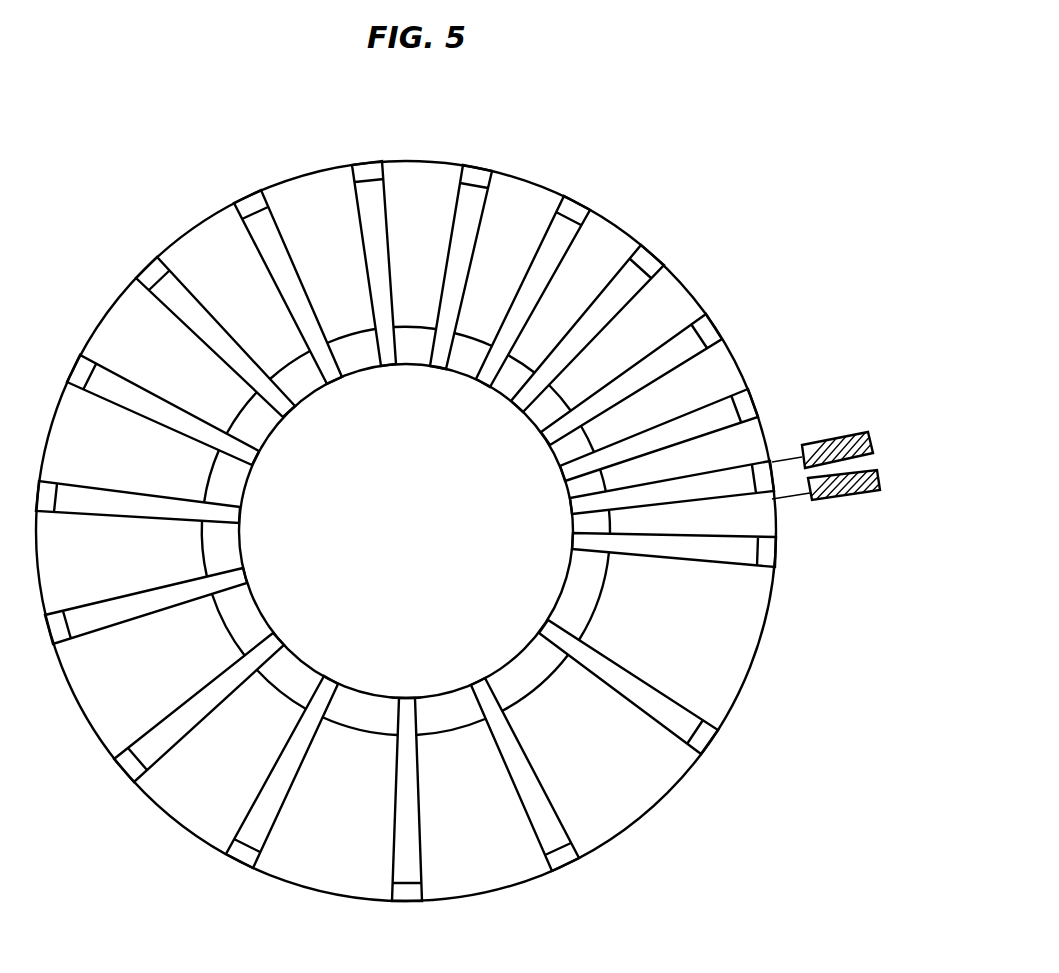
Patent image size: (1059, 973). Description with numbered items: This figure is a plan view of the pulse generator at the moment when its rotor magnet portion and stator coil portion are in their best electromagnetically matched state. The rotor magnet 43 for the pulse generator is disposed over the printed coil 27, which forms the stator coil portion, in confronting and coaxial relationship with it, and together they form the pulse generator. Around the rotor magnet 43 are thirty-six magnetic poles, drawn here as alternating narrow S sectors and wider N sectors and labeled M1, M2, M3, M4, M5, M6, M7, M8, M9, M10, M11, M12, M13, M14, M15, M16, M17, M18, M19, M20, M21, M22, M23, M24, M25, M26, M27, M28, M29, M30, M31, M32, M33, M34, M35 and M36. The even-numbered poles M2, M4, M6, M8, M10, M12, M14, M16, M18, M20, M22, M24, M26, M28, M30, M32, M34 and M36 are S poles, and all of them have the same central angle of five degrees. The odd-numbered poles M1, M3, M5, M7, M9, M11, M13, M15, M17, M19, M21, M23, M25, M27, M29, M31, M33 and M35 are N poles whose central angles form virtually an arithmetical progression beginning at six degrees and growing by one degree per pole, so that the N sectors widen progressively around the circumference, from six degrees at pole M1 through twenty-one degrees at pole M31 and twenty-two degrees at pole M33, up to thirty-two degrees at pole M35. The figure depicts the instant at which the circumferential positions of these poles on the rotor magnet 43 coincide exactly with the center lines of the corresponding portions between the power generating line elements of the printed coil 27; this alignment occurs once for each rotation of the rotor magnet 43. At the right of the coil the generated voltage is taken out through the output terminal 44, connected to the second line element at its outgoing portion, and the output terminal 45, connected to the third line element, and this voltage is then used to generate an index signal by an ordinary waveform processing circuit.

The printed coil 27 is at (474, 299).
The rotor magnet for the pulse generator 43 is at (424, 192).
The output terminal 44 is at (880, 480).
The output terminal 45 is at (873, 443).
The magnetic pole M1 is at (587, 523).
The magnetic pole M2 is at (585, 504).
The magnetic pole M3 is at (581, 486).
The magnetic pole M4 is at (576, 468).
The magnetic pole M5 is at (567, 449).
The magnetic pole M6 is at (557, 431).
The magnetic pole M7 is at (543, 412).
The magnetic pole M8 is at (527, 396).
The magnetic pole M9 is at (509, 382).
The magnetic pole M10 is at (490, 370).
The magnetic pole M11 is at (466, 360).
The magnetic pole M12 is at (433, 352).
The magnetic pole M13 is at (414, 350).
The magnetic pole M14 is at (389, 350).
The magnetic pole M15 is at (357, 357).
The magnetic pole M16 is at (328, 367).
The magnetic pole M17 is at (302, 383).
The magnetic pole M18 is at (279, 402).
The magnetic pole M19 is at (259, 425).
The magnetic pole M20 is at (243, 452).
The magnetic pole M21 is at (232, 482).
The magnetic pole M22 is at (226, 514).
The magnetic pole M23 is at (226, 547).
The magnetic pole M24 is at (232, 579).
The magnetic pole M25 is at (246, 616).
The magnetic pole M26 is at (268, 648).
The magnetic pole M27 is at (294, 673).
The magnetic pole M28 is at (324, 693).
The magnetic pole M29 is at (364, 707).
The magnetic pole M30 is at (407, 712).
The magnetic pole M31 is at (446, 707).
The magnetic pole M32 is at (484, 694).
The magnetic pole M33 is at (523, 669).
The magnetic pole M34 is at (555, 634).
The magnetic pole M35 is at (577, 590).
The magnetic pole M36 is at (587, 541).